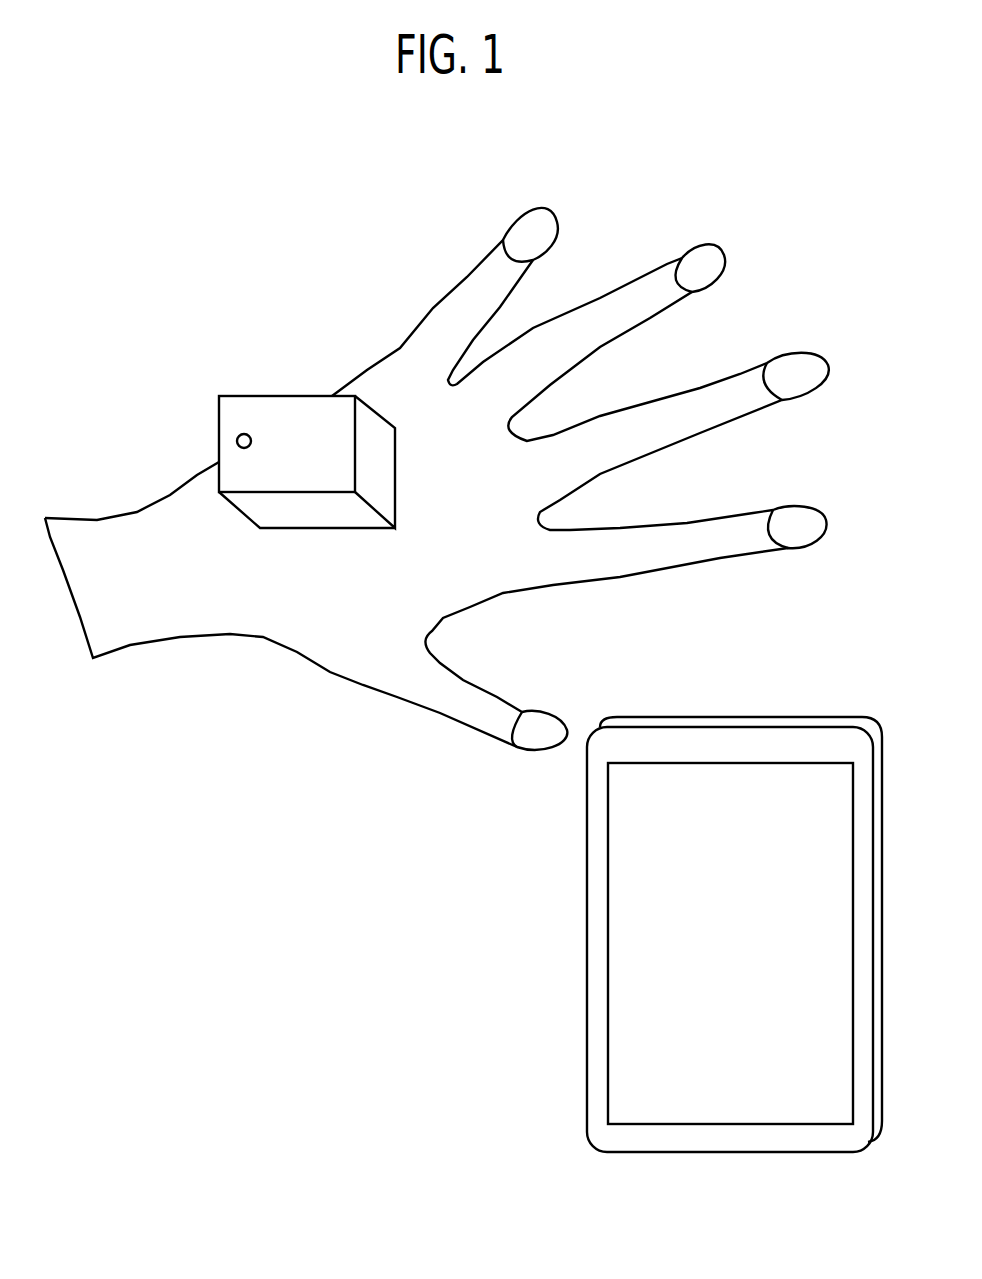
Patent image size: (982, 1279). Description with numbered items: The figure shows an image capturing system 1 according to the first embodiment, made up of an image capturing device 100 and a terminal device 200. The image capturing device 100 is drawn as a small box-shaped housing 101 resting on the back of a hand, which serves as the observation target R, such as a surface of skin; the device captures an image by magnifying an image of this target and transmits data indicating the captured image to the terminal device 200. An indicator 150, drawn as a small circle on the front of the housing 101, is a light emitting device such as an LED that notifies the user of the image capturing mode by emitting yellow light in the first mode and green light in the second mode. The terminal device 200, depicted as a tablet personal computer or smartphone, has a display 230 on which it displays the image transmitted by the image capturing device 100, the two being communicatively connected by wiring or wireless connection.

The image capturing system 1 is at (236, 270).
The image capturing device 100 is at (315, 380).
The housing 101 is at (247, 393).
The indicator 150 is at (237, 440).
The terminal device 200 is at (722, 694).
The display 230 is at (655, 962).
The observation target R is at (343, 605).